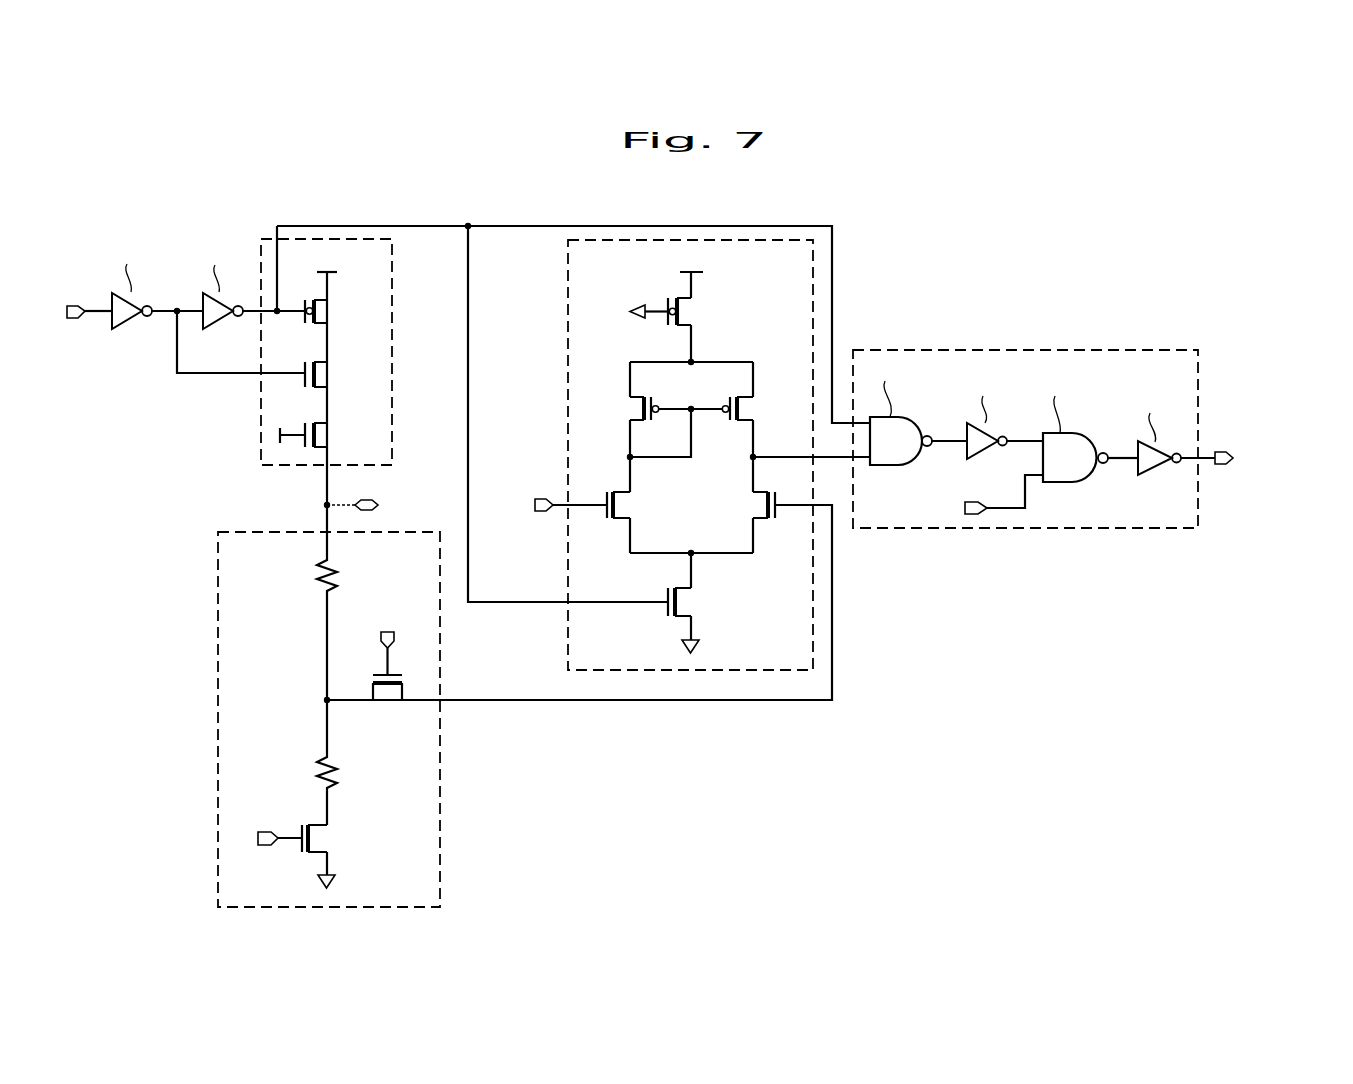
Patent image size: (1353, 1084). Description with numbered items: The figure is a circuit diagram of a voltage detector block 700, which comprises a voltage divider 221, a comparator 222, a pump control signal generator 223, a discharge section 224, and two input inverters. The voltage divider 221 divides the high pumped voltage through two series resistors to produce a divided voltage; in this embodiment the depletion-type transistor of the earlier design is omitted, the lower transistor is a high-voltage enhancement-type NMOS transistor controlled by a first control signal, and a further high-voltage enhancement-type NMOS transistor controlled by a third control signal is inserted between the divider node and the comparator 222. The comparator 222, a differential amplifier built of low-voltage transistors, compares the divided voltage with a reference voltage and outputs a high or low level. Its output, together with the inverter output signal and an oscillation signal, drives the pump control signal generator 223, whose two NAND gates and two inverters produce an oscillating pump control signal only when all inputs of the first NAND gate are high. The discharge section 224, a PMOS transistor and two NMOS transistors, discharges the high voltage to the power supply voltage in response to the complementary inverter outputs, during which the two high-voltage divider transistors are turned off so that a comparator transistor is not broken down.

The voltage detector block 700 is at (1200, 192).
The voltage divider 221 is at (218, 750).
The comparator 222 is at (568, 340).
The pump control signal generator 223 is at (1116, 350).
The discharge section 224 is at (261, 424).